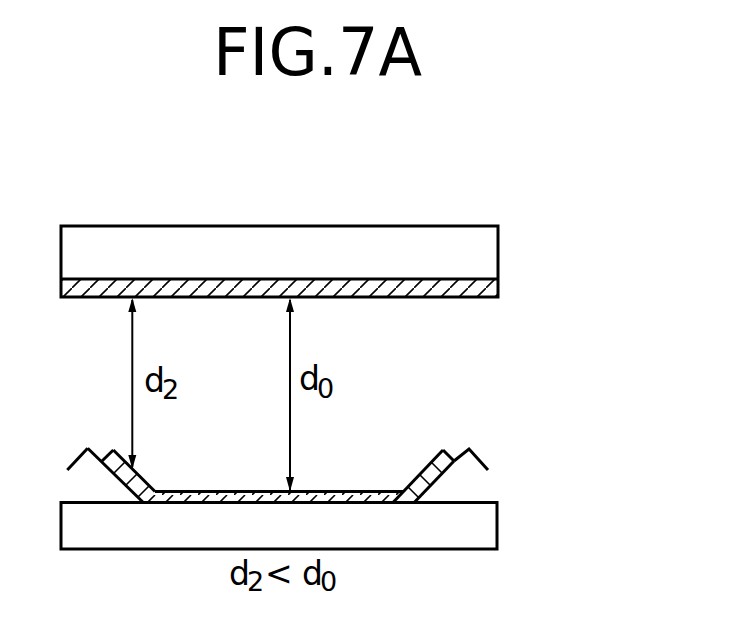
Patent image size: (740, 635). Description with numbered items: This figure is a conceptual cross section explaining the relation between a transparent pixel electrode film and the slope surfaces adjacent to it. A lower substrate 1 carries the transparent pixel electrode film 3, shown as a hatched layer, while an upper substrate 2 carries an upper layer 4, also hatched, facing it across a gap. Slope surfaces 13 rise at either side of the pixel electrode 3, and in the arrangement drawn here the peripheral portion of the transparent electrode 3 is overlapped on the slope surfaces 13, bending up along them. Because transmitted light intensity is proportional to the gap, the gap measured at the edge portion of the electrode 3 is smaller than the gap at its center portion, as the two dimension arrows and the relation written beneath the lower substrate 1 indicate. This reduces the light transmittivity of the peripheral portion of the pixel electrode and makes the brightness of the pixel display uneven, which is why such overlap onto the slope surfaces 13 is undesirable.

The lower substrate 1 is at (483, 528).
The upper substrate 2 is at (478, 249).
The transparent pixel electrode film 3 is at (377, 491).
The upper electrode layer 4 is at (490, 282).
The slope surfaces 13 is at (489, 449).